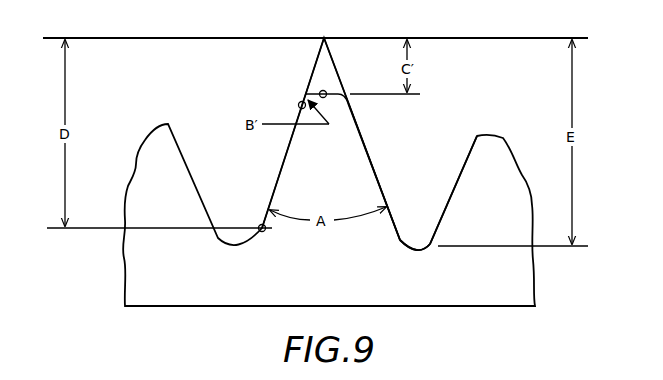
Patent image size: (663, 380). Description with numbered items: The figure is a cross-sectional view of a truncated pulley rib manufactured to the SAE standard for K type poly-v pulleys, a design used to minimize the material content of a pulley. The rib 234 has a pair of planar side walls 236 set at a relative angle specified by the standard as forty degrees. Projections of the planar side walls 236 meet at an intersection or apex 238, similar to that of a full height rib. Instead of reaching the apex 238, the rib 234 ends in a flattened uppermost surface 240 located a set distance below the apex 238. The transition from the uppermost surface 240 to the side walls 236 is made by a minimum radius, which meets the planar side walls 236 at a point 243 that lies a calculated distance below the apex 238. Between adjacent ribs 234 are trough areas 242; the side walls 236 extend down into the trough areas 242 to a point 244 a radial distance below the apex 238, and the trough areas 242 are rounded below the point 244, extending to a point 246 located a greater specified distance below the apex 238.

The rib 234 is at (366, 171).
The planar side walls 236 is at (363, 136).
The intersection 238 is at (322, 36).
The uppermost surface 240 is at (326, 91).
The trough areas 242 is at (430, 222).
The point 243 is at (298, 103).
The point 244 is at (266, 231).
The point 246 is at (416, 248).